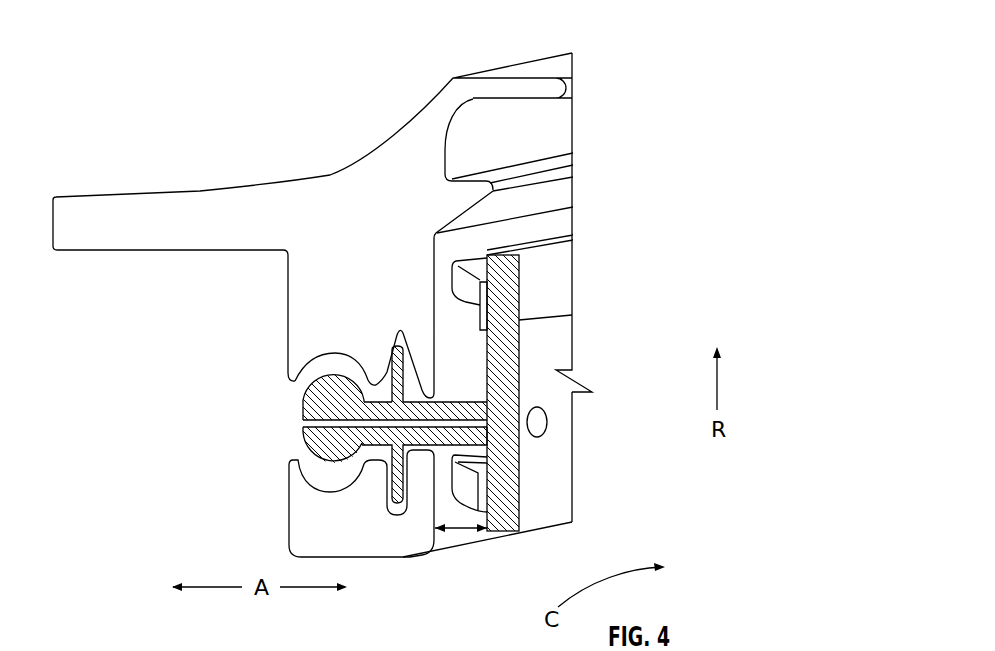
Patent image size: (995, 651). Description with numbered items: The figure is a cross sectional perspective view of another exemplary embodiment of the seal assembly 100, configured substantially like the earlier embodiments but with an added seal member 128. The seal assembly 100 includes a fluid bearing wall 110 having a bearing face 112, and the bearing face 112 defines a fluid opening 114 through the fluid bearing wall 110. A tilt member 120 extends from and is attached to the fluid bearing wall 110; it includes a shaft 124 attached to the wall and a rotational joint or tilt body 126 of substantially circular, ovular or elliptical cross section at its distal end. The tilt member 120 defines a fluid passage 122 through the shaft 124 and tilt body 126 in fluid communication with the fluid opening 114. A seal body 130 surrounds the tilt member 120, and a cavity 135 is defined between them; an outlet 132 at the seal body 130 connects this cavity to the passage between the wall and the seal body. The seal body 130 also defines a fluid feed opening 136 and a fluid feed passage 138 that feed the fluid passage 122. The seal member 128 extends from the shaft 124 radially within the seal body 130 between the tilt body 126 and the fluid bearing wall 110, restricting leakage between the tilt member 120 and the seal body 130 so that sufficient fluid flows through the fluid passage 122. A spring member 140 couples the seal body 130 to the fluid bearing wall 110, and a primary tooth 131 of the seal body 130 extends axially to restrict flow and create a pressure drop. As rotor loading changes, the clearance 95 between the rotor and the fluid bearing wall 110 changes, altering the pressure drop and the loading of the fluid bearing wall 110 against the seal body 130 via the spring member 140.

The seal assembly 100 is at (355, 68).
The seal body 130 is at (368, 173).
The primary tooth 131 is at (545, 156).
The spring member 140 is at (537, 222).
The fluid bearing wall 110 is at (555, 244).
The bearing face 112 is at (552, 338).
The fluid opening 114 is at (553, 421).
The shaft 124 is at (425, 440).
The seal member 128 is at (388, 377).
The tilt member 120 is at (300, 393).
The tilt body 126 is at (322, 372).
The cavity 135 is at (386, 348).
The outlet 132 is at (445, 394).
The fluid feed opening 136 is at (284, 454).
The fluid feed passage 138 is at (300, 423).
The fluid passage 122 is at (352, 421).
The clearance 95 is at (460, 530).